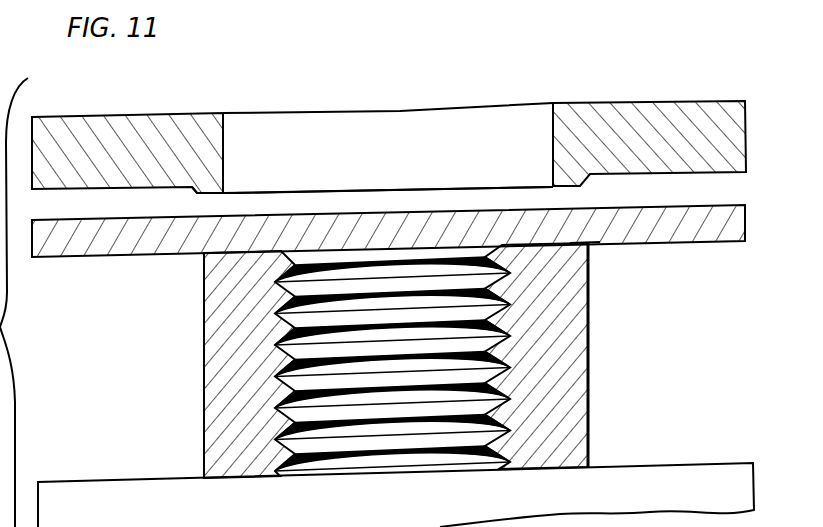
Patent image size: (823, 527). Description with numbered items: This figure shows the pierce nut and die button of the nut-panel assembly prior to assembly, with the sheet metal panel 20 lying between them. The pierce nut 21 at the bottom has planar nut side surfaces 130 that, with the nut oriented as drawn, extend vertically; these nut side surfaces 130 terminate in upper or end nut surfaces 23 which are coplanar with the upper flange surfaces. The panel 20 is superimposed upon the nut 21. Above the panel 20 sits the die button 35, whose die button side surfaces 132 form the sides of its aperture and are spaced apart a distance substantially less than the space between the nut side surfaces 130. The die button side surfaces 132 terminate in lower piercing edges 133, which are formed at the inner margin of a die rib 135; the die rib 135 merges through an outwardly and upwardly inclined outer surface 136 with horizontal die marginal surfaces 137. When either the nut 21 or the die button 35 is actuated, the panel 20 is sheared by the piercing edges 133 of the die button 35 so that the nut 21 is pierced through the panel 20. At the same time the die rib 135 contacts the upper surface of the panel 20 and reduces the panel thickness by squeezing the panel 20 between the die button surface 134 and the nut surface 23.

The sheet metal panel 20 is at (705, 232).
The pierce nut 21 is at (592, 332).
The end nut surface 23 is at (574, 243).
The die button 35 is at (630, 100).
The nut side surfaces 130 is at (204, 383).
The die button side surfaces 132 is at (224, 140).
The piercing edges 133 is at (222, 193).
The die button surface 134 is at (208, 192).
The die rib 135 is at (200, 191).
The outer surface 136 is at (188, 193).
The die marginal surfaces 137 is at (62, 187).